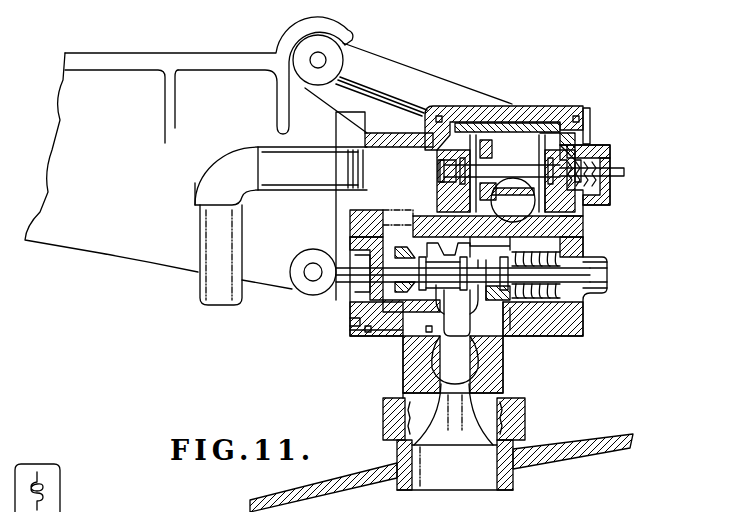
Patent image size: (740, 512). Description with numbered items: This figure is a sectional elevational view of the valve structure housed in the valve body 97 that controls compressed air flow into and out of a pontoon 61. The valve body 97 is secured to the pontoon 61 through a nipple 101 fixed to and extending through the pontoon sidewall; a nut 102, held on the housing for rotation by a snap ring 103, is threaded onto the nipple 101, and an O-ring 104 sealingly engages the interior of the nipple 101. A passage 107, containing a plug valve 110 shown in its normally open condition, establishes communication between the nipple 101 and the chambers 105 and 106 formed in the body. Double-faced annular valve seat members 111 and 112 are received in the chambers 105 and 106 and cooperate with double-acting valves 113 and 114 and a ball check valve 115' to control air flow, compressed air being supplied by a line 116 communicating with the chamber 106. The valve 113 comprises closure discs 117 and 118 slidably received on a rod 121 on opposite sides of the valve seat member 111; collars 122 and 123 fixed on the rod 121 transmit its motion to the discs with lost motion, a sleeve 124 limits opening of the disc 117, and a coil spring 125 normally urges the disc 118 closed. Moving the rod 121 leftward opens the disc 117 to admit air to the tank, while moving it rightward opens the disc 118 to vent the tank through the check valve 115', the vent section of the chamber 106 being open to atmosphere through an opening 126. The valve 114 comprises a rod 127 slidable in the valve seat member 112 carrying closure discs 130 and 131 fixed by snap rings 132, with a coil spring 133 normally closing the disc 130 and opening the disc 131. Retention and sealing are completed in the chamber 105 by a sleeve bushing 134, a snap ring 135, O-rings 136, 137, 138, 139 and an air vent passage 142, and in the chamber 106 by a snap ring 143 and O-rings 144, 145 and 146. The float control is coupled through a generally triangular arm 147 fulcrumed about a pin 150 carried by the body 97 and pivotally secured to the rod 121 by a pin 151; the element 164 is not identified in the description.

The pontoon 61 is at (605, 433).
The valve body 97 is at (502, 97).
The nipple 101 is at (433, 465).
The nut 102 is at (525, 411).
The snap ring 103 is at (407, 400).
The O-ring 104 is at (505, 421).
The chamber 105 is at (566, 254).
The chamber 106 is at (395, 134).
The passage 107 is at (472, 402).
The plug valve 110 is at (428, 368).
The valve seat member 111 is at (352, 327).
The valve seat member 112 is at (606, 144).
The double-acting valve 113 is at (509, 291).
The double-acting valve 114 is at (517, 156).
The ball check valve 115' is at (507, 181).
The line 116 is at (210, 283).
The closure disc 117 is at (410, 238).
The closure disc 118 is at (505, 248).
The rod 121 is at (345, 292).
The collar 122 is at (449, 265).
The collar 123 is at (461, 286).
The sleeve 124 is at (386, 330).
The coil spring 125 is at (538, 287).
The opening 126 is at (606, 204).
The rod 127 is at (626, 173).
The closure disc 130 is at (440, 165).
The closure disc 131 is at (552, 134).
The snap ring 132 is at (594, 160).
The coil spring 133 is at (612, 157).
The sleeve bushing 134 is at (600, 278).
The snap ring 135 is at (350, 331).
The O-ring 136 is at (366, 332).
The O-ring 137 is at (505, 337).
The O-ring 138 is at (420, 283).
The O-ring 139 is at (359, 256).
The air vent passage 142 is at (600, 293).
The snap ring 143 is at (591, 120).
The O-ring 144 is at (441, 116).
The O-ring 145 is at (443, 199).
The O-ring 146 is at (472, 153).
The arm 147 is at (128, 57).
The pin 150 is at (320, 61).
The pin 151 is at (308, 276).
The solenoid 164 is at (62, 497).